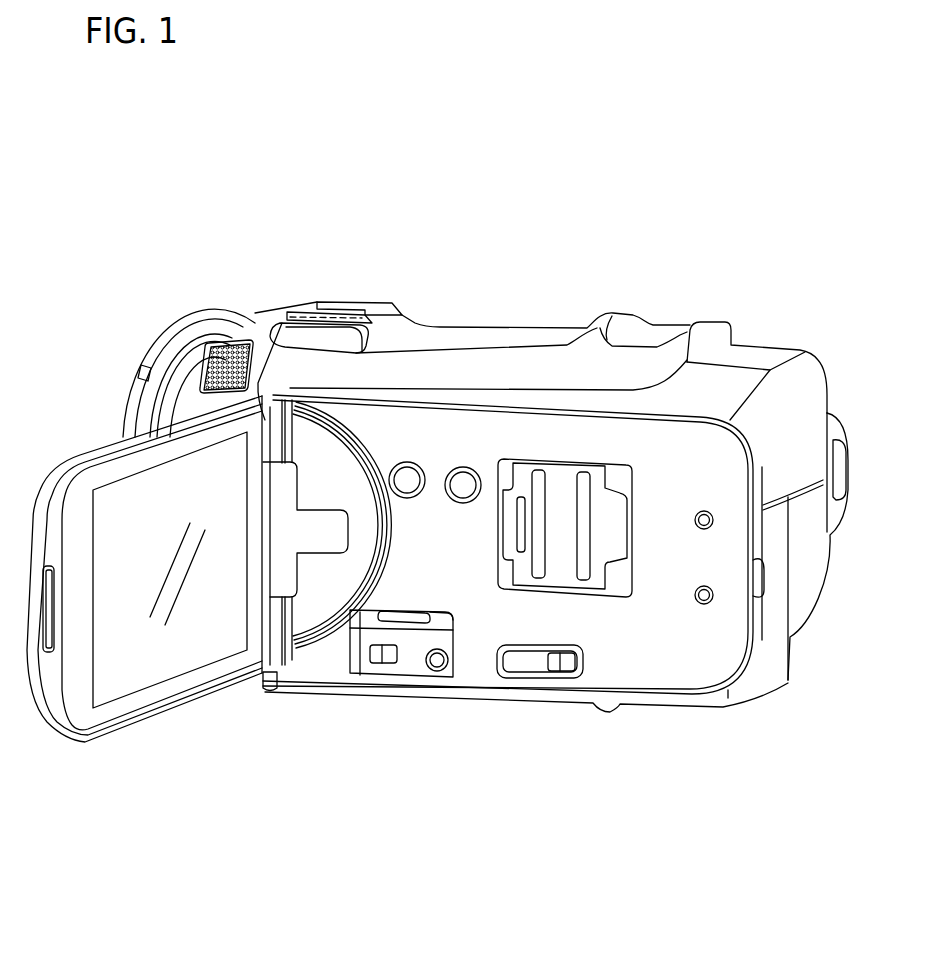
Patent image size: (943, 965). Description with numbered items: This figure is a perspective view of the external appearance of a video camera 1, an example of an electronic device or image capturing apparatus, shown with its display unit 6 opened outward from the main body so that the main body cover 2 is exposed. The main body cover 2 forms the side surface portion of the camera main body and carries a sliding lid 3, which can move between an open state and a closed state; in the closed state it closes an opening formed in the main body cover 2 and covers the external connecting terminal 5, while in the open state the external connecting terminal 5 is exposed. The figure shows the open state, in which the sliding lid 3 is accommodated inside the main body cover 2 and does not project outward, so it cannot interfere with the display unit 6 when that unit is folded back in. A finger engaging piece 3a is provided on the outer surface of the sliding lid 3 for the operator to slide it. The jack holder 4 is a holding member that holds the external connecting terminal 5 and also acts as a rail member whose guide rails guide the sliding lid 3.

The video camera 1 is at (494, 302).
The main body cover 2 is at (647, 670).
The sliding lid 3 is at (440, 617).
The finger engaging piece 3a is at (410, 612).
The jack holder 4 is at (410, 660).
The external connecting terminal 5 is at (387, 663).
The display unit 6 is at (80, 432).